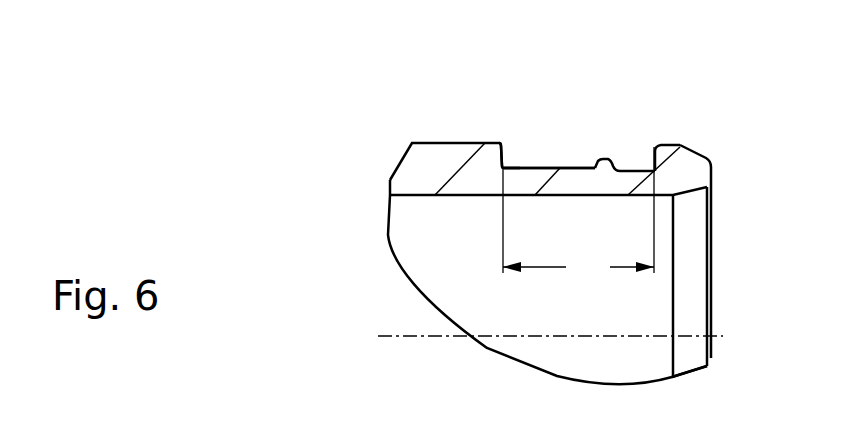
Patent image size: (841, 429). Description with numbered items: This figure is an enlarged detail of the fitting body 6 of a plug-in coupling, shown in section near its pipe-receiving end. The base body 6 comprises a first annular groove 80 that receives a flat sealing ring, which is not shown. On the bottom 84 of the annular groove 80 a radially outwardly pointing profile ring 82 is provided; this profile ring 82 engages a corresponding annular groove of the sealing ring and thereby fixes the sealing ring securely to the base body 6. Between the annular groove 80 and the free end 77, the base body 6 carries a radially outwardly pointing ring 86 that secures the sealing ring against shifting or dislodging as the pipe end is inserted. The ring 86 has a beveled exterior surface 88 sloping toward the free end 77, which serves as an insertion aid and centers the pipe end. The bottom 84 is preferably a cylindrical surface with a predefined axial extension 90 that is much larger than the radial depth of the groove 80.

The fitting body 6 is at (408, 180).
The free end 77 is at (711, 352).
The annular groove 80 is at (513, 162).
The profile ring 82 is at (602, 158).
The bottom 84 is at (540, 168).
The ring 86 is at (668, 165).
The beveled exterior surface 88 is at (696, 153).
The axial extension 90 is at (578, 216).